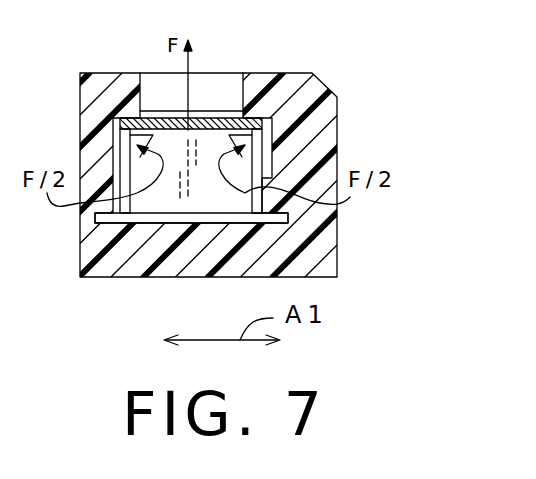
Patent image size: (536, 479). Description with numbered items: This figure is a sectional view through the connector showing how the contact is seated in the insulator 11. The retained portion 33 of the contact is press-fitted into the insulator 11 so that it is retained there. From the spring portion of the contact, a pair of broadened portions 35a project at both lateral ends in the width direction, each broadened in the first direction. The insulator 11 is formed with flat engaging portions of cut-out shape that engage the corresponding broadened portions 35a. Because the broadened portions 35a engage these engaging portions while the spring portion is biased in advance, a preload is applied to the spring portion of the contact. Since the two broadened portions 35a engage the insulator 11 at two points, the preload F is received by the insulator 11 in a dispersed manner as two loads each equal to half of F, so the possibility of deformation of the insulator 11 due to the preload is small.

The insulator 11 is at (320, 113).
The broadened portion 35a is at (218, 128).
The retained portion 33 is at (205, 224).